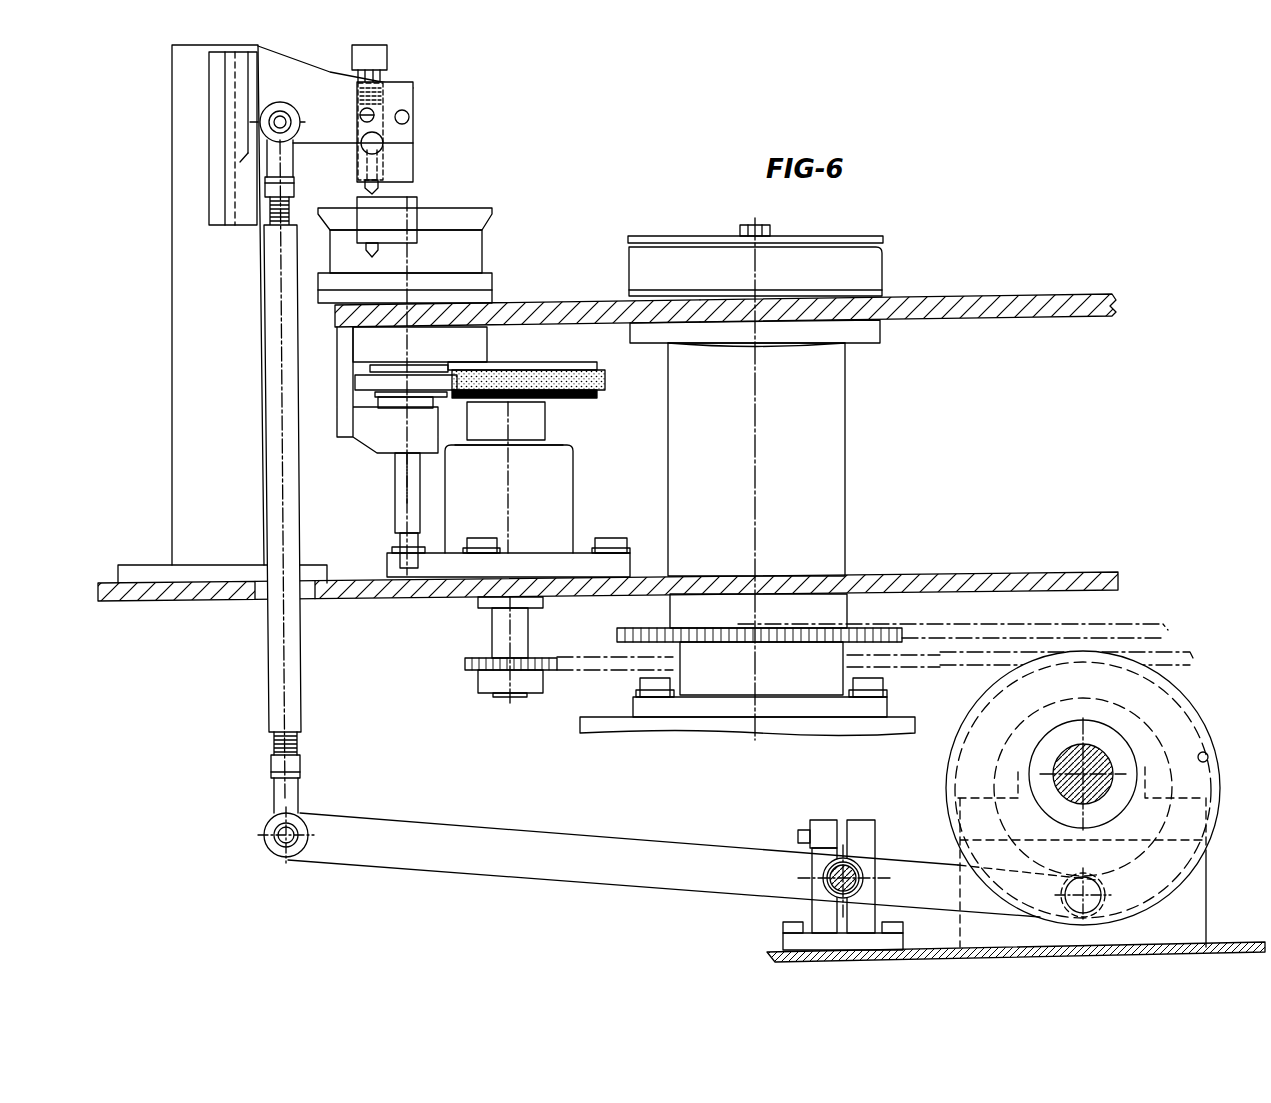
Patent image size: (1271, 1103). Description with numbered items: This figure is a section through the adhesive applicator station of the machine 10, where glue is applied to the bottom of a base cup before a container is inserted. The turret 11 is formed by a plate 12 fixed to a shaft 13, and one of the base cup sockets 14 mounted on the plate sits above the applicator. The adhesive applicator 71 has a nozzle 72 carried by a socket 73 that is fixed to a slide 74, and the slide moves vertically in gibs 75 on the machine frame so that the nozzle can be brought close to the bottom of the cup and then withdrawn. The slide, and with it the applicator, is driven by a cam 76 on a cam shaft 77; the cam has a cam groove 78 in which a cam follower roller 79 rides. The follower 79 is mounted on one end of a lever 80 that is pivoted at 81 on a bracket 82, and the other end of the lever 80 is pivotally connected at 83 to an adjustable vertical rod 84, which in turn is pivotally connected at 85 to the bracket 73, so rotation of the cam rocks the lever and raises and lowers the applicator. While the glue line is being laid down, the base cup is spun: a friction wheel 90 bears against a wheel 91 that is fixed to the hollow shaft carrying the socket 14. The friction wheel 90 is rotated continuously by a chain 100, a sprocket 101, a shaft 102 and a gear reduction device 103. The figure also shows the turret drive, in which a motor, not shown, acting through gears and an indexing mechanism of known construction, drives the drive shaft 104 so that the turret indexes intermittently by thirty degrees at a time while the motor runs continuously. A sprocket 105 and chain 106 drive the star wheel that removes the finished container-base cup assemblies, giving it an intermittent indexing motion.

The machine 10 is at (910, 246).
The turret 11 is at (982, 299).
The plate 12 is at (593, 276).
The shaft 13 is at (678, 260).
The base cup socket 14 is at (480, 249).
The adhesive applicator 71 is at (420, 154).
The nozzle 72 is at (378, 190).
The socket 73 is at (332, 120).
The slide 74 is at (240, 160).
The gibs 75 is at (215, 100).
The cam 76 is at (1206, 727).
The cam shaft 77 is at (1100, 766).
The cam groove 78 is at (1214, 758).
The cam follower roller 79 is at (1196, 880).
The lever 80 is at (410, 832).
The pivot 81 is at (845, 862).
The bracket 82 is at (823, 822).
The pivotal connection 83 is at (268, 840).
The adjustable vertical rod 84 is at (273, 682).
The pivotal connection 85 is at (290, 138).
The friction wheel 90 is at (606, 385).
The wheel 91 is at (355, 384).
The chain 100 is at (600, 632).
The sprocket 101 is at (465, 664).
The shaft 102 is at (497, 626).
The gear reduction device 103 is at (567, 498).
The drive shaft 104 is at (836, 496).
The sprocket 105 is at (870, 628).
The chain 106 is at (1020, 620).